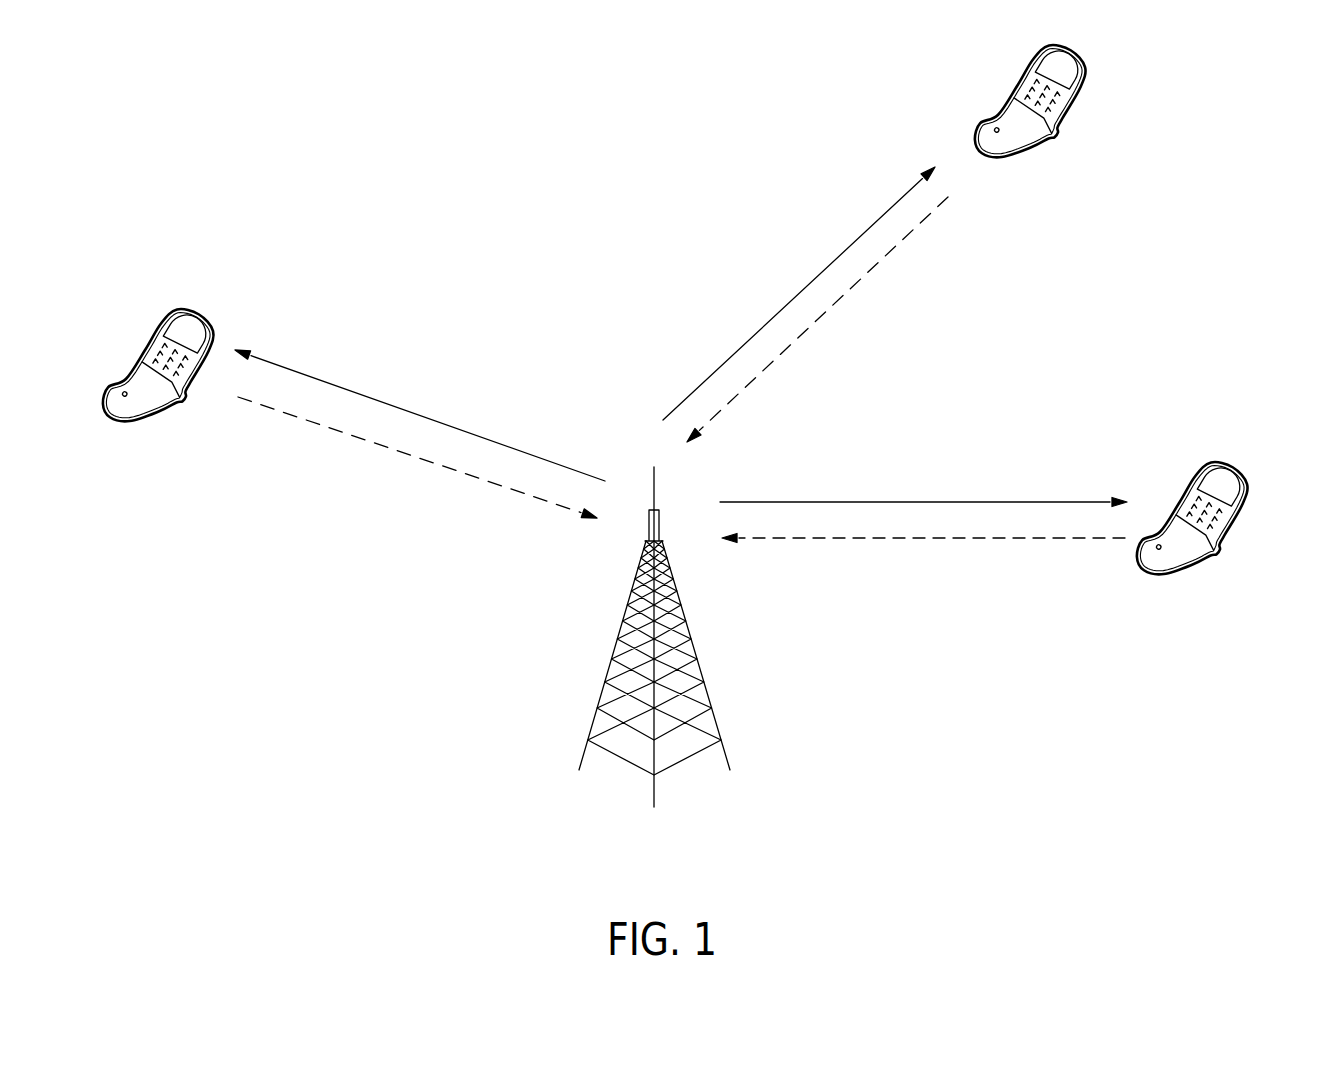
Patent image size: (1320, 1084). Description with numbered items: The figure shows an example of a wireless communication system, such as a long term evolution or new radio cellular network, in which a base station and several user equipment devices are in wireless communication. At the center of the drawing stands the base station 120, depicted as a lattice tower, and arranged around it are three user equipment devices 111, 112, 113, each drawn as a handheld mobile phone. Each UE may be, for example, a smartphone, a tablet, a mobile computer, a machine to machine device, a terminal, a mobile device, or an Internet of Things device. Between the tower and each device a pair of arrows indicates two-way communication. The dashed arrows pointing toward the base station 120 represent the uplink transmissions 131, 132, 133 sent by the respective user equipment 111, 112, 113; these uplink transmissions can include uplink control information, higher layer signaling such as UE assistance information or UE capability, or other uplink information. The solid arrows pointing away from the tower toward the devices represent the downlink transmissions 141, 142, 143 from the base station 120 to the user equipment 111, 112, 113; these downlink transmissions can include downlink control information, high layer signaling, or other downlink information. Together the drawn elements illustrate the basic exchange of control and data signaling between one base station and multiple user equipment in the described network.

The user equipment 111 is at (185, 398).
The user equipment 112 is at (1225, 553).
The user equipment 113 is at (1063, 136).
The base station 120 is at (706, 690).
The uplink transmission 131 is at (373, 443).
The uplink transmission 132 is at (932, 540).
The uplink transmission 133 is at (813, 324).
The downlink transmission 141 is at (405, 410).
The downlink transmission 142 is at (938, 502).
The downlink transmission 143 is at (797, 294).